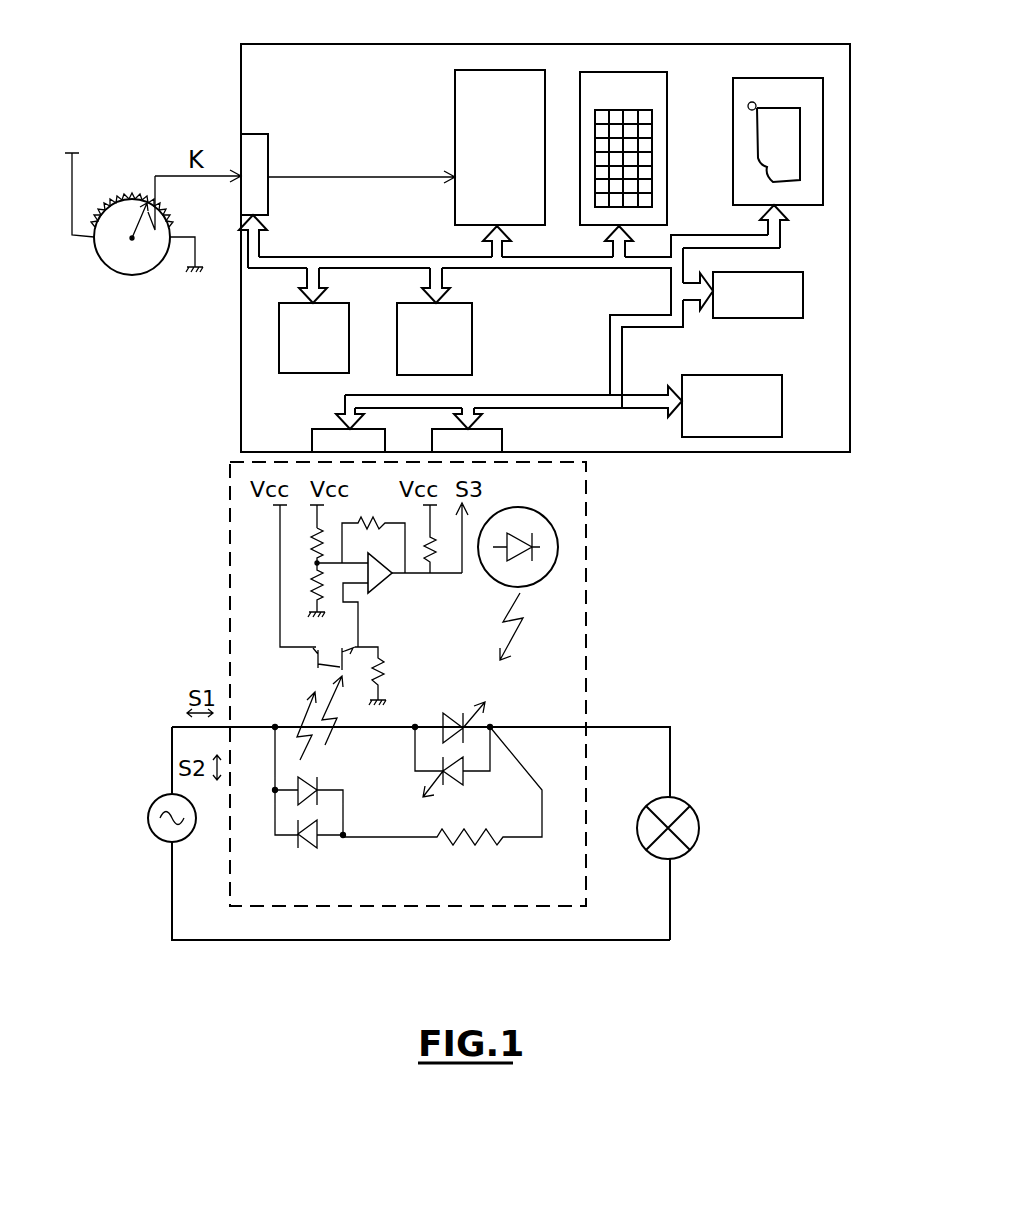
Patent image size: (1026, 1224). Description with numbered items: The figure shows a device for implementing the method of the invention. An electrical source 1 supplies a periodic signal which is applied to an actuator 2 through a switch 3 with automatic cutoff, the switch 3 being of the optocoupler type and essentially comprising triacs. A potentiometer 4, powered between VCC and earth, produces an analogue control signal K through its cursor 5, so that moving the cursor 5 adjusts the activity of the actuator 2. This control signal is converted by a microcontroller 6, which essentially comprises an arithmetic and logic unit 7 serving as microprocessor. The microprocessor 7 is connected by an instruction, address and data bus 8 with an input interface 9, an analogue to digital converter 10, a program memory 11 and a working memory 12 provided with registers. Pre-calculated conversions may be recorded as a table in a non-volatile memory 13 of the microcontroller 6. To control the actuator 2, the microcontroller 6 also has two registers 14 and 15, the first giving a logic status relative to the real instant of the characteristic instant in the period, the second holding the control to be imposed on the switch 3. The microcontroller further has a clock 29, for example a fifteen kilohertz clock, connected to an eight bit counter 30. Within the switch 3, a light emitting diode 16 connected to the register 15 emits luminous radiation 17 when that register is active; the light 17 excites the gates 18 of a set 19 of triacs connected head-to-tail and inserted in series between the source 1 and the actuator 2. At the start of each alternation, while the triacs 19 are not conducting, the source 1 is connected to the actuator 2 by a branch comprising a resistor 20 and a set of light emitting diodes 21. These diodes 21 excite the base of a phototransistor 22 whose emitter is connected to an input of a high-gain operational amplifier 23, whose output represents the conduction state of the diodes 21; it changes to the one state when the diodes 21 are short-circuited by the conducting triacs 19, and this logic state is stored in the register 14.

The electrical source 1 is at (152, 830).
The actuator 2 is at (675, 852).
The switch with automatic cutoff 3 is at (572, 697).
The potentiometer 4 is at (128, 262).
The cursor 5 is at (133, 220).
The microcontroller 6 is at (830, 380).
The arithmetic and logic unit 7 is at (723, 428).
The instruction, address and data bus 8 is at (530, 268).
The input interface 9 is at (253, 162).
The analogue to digital converter 10 is at (470, 102).
The program memory 11 is at (815, 108).
The working memory 12 is at (797, 303).
The non-volatile memory 13 is at (580, 88).
The register 14 is at (327, 433).
The register 15 is at (497, 443).
The light emitting diode 16 is at (557, 523).
The luminous radiation 17 is at (522, 635).
The gates 18 is at (478, 708).
The set of triacs 19 is at (465, 778).
The resistor 20 is at (472, 843).
The set of light emitting diodes 21 is at (292, 820).
The phototransistor 22 is at (313, 658).
The operational amplifier 23 is at (386, 583).
The clock 29 is at (288, 338).
The counter 30 is at (463, 362).